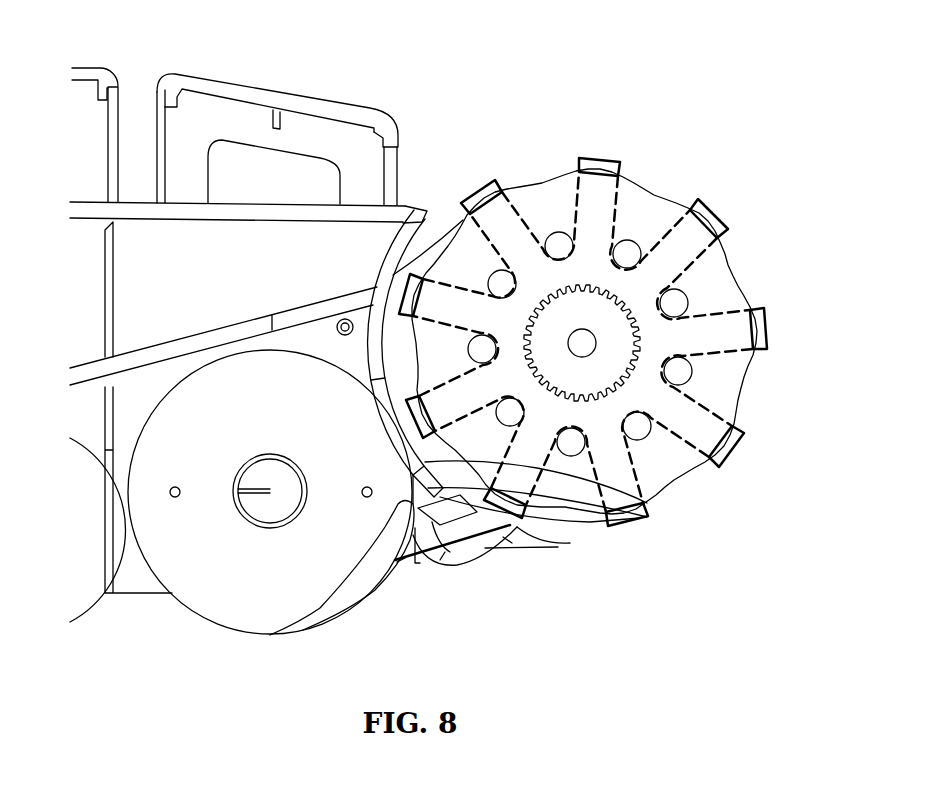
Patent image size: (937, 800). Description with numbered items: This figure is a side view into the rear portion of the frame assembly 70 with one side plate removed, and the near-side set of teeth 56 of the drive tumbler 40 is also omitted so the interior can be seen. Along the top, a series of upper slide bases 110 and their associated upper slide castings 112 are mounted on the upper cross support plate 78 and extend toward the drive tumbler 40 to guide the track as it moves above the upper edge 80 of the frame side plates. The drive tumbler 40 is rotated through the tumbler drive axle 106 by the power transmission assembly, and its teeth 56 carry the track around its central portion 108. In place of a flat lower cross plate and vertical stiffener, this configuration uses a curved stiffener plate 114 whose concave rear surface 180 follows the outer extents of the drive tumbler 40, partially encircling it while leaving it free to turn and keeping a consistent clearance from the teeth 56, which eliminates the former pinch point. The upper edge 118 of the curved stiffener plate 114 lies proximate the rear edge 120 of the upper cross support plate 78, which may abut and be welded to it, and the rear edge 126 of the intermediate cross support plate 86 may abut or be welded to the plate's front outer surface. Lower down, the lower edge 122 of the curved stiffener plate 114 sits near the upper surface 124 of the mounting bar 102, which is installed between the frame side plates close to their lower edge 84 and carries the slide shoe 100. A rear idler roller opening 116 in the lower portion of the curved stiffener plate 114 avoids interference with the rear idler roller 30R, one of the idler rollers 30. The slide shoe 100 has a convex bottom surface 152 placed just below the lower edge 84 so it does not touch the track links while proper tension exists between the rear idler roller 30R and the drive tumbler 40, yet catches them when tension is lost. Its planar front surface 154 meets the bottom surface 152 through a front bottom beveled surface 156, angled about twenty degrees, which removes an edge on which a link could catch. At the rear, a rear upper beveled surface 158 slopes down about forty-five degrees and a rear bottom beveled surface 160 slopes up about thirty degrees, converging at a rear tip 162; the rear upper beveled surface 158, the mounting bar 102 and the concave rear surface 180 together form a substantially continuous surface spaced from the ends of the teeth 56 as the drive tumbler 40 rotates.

The row unit wheel 30 is at (88, 585).
The rear idler roller 30R is at (188, 600).
The drive tumbler 40 is at (735, 265).
The teeth 56 is at (618, 165).
The frame assembly 70 is at (574, 98).
The upper cross support plate 78 is at (98, 212).
The upper edge 80 is at (137, 202).
The lower edge 84 is at (418, 563).
The intermediate cross support plate 86 is at (165, 350).
The slide shoe 100 is at (487, 550).
The mounting bar 102 is at (433, 523).
The tumbler drive axle 106 is at (695, 410).
The central portion 108 is at (665, 468).
The upper slide bases 110 is at (112, 115).
The upper slide castings 112 is at (85, 78).
The curved stiffener plate 114 is at (490, 192).
The rear idler roller opening 116 is at (645, 507).
The upper edge 118 is at (440, 255).
The rear edge 120 is at (408, 237).
The lower edge 122 is at (603, 522).
The upper surface 124 is at (397, 562).
The rear edge 126 is at (378, 296).
The bottom surface 152 is at (473, 568).
The front surface 154 is at (415, 562).
The front bottom beveled surface 156 is at (443, 568).
The rear upper beveled surface 158 is at (558, 535).
The rear bottom beveled surface 160 is at (512, 543).
The rear tip 162 is at (518, 528).
The concave rear surface 180 is at (463, 220).